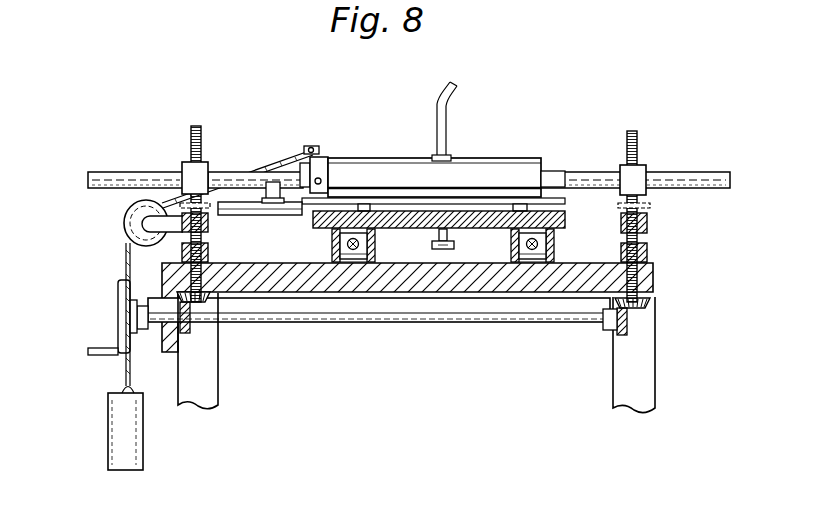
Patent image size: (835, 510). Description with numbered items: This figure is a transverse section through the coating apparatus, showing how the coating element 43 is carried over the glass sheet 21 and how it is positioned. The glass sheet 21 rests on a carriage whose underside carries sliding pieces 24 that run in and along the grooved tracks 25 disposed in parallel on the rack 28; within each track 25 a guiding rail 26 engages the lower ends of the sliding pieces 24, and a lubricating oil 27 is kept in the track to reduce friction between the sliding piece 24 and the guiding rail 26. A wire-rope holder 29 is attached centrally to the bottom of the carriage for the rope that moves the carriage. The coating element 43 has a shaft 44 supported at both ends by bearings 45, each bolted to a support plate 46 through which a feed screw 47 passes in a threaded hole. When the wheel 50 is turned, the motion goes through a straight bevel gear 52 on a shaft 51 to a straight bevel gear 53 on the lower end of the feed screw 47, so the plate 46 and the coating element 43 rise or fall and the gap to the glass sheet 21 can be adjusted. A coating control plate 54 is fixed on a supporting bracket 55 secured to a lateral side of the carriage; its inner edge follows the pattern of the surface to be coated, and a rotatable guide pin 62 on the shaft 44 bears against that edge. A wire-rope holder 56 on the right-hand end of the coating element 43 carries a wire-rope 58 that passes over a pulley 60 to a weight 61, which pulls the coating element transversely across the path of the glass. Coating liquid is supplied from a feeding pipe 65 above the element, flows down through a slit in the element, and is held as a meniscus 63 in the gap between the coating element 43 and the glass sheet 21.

The glass sheet 21 is at (570, 224).
The sliding pieces 24 is at (371, 231).
The grooved tracks 25 is at (366, 250).
The guiding rail 26 is at (336, 252).
The lubricating oil 27 is at (360, 264).
The rack 28 is at (653, 272).
The wire-rope holder 29 is at (450, 244).
The coating element 43 is at (497, 165).
The shaft 44 is at (696, 173).
The bearings 45 is at (206, 165).
The support plate 46 is at (208, 232).
The feed screw 47 is at (192, 136).
The wheel 50 is at (119, 312).
The shaft 51 is at (333, 323).
The straight bevel gear 52 is at (190, 333).
The straight bevel gear 53 is at (222, 307).
The coating control plate 54 is at (262, 202).
The supporting bracket 55 is at (262, 215).
The wire-rope holder 56 is at (326, 158).
The wire-rope 58 is at (126, 250).
The pulley 60 is at (125, 217).
The weight 61 is at (143, 450).
The guide pin 62 is at (298, 168).
The meniscus 63 is at (556, 199).
The feeding pipe 65 is at (452, 90).